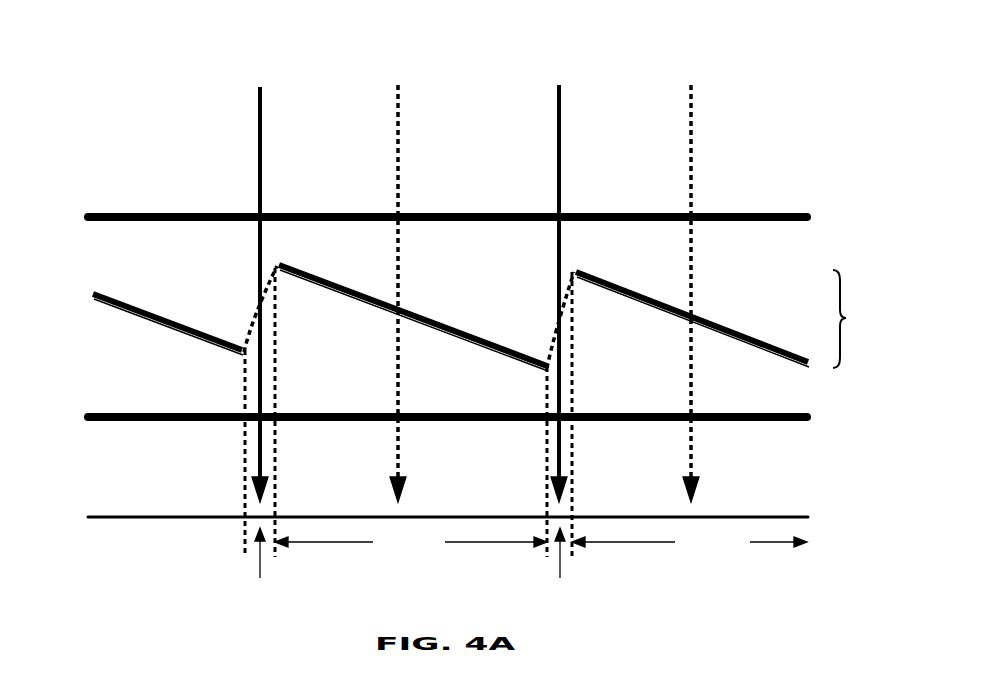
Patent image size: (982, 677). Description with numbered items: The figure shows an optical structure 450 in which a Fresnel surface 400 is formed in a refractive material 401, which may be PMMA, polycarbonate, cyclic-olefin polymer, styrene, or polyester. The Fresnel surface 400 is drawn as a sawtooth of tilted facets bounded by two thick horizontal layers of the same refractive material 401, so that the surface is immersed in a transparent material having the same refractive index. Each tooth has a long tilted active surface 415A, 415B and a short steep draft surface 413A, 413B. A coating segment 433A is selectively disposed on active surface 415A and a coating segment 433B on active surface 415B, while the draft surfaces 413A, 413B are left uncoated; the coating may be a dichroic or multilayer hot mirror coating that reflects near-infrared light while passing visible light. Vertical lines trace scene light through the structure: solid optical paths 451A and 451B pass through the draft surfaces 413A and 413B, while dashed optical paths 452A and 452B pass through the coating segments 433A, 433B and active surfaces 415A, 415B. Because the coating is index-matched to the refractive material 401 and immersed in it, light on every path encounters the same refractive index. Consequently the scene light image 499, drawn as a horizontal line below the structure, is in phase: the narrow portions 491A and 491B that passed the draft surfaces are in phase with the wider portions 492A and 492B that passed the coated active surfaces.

The optical structure 450 is at (752, 33).
The Fresnel surface 400 is at (487, 317).
The refractive material 401 is at (182, 264).
The optical path 451A is at (259, 117).
The optical path 452A is at (397, 115).
The optical path 451B is at (558, 127).
The optical path 452B is at (690, 117).
The coating segment 433A is at (419, 299).
The coating segment 433B is at (717, 308).
The active surface 415A is at (487, 363).
The active surface 415B is at (735, 352).
The draft surface 413A is at (243, 325).
The draft surface 413B is at (543, 340).
The scene light image 499 is at (446, 518).
The portion of scene light image 491A is at (260, 570).
The portion of scene light image 491B is at (560, 570).
The portion of scene light image 492A is at (411, 541).
The portion of scene light image 492B is at (689, 541).